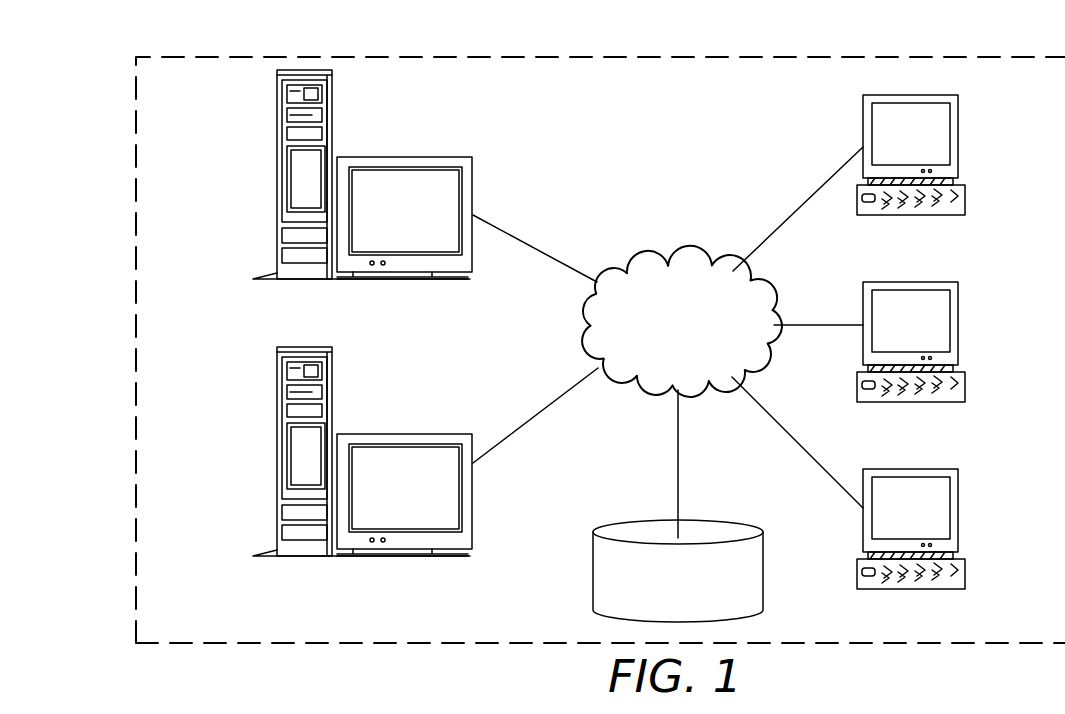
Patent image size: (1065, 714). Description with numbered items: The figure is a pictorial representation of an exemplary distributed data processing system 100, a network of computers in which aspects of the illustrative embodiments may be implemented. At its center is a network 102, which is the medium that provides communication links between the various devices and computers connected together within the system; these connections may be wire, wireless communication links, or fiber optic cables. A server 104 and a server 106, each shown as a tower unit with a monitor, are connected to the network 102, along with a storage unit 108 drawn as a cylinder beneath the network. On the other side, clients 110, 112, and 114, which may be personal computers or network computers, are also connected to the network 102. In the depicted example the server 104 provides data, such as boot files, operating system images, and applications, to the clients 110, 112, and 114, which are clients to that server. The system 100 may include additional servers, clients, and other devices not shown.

The distributed data processing system 100 is at (745, 86).
The network 102 is at (640, 264).
The server 104 is at (277, 178).
The server 106 is at (277, 456).
The storage unit 108 is at (593, 575).
The client 110 is at (960, 143).
The client 112 is at (960, 324).
The client 114 is at (960, 511).